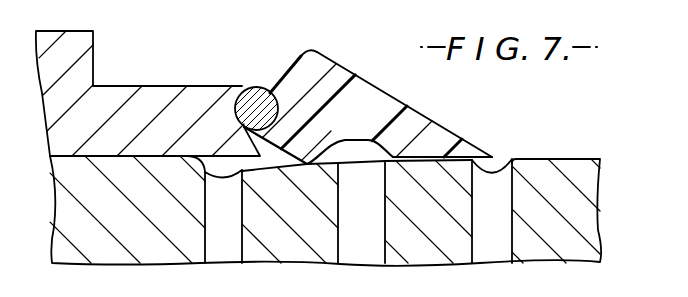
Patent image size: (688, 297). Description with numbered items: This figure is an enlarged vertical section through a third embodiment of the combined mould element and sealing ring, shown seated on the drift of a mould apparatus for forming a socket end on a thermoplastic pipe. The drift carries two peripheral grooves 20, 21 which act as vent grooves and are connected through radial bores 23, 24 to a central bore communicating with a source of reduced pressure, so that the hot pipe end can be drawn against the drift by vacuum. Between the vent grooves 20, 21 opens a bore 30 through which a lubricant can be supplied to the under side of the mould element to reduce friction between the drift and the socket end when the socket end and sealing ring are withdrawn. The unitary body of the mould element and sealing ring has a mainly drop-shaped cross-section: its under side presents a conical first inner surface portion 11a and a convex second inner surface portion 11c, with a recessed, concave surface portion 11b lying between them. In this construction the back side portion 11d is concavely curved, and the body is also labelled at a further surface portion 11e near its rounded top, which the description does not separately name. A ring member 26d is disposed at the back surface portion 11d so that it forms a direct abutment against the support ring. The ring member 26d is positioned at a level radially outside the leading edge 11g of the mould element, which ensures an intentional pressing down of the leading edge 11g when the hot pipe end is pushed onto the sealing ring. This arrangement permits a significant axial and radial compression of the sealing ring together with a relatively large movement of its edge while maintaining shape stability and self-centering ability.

The conical first inner surface portion 11a is at (421, 153).
The recessed concave surface portion 11b is at (406, 106).
The convex second inner surface portion 11c is at (375, 87).
The back surface portion 11d is at (288, 68).
The seal rounded top 11e is at (316, 52).
The leading edge 11g is at (483, 148).
The peripheral groove 20 is at (494, 164).
The peripheral groove 21 is at (213, 153).
The radial bore 23 is at (507, 237).
The radial bore 24 is at (240, 236).
The ring member 26d is at (245, 99).
The bore 30 is at (377, 236).